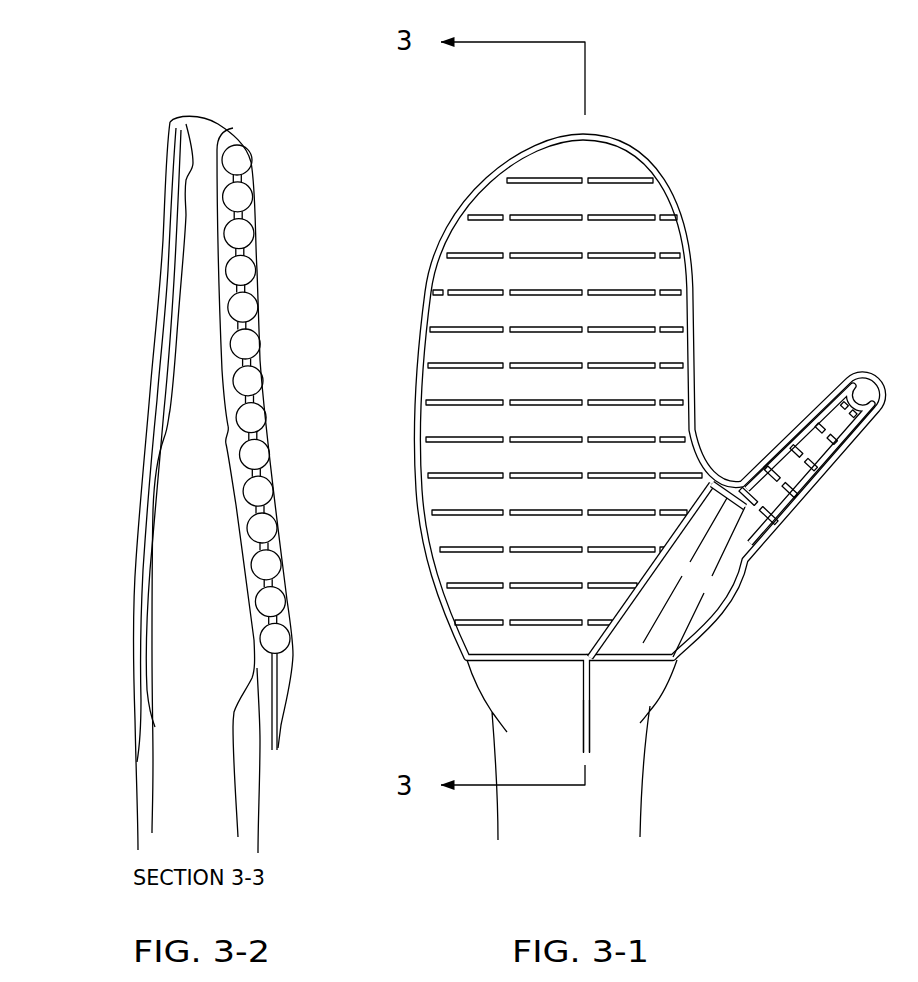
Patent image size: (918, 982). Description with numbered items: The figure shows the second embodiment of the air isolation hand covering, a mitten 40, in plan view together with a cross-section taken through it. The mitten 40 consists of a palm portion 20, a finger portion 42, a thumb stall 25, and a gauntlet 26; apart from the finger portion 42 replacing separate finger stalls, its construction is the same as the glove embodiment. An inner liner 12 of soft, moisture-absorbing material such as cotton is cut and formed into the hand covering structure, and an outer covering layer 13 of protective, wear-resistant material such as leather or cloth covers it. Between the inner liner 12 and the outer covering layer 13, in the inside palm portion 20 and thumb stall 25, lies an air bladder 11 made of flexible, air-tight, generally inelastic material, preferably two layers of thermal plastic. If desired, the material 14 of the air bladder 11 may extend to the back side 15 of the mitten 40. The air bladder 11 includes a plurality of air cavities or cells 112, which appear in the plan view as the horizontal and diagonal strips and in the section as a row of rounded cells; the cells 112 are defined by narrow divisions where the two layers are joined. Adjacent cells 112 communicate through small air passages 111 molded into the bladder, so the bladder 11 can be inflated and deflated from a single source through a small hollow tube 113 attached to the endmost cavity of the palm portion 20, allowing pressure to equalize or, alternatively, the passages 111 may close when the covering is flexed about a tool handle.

In FIG. 3-2, the mitten 40 is at (125, 183).
In FIG. 3-1, the mitten 40 is at (747, 323).
In FIG. 3-1, the finger portion 42 is at (542, 363).
In FIG. 3-1, the thumb stall 25 is at (815, 445).
In FIG. 3-1, the palm portion 20 is at (580, 531).
In FIG. 3-2, the air cavities or cells 112 is at (244, 302).
In FIG. 3-1, the air cavities or cells 112 is at (478, 532).
In FIG. 3-2, the air passages 111 is at (254, 351).
In FIG. 3-1, the air passages 111 is at (504, 616).
In FIG. 3-2, the hollow tube 113 is at (290, 740).
In FIG. 3-1, the hollow tube 113 is at (580, 715).
In FIG. 3-2, the gauntlet 26 is at (265, 803).
In FIG. 3-1, the gauntlet 26 is at (612, 769).
In FIG. 3-2, the material of the air bladder 14 is at (235, 128).
In FIG. 3-2, the back side 15 is at (146, 344).
In FIG. 3-2, the air bladder 11 is at (272, 412).
In FIG. 3-2, the inner liner 12 is at (241, 431).
In FIG. 3-2, the outer covering layer 13 is at (271, 469).